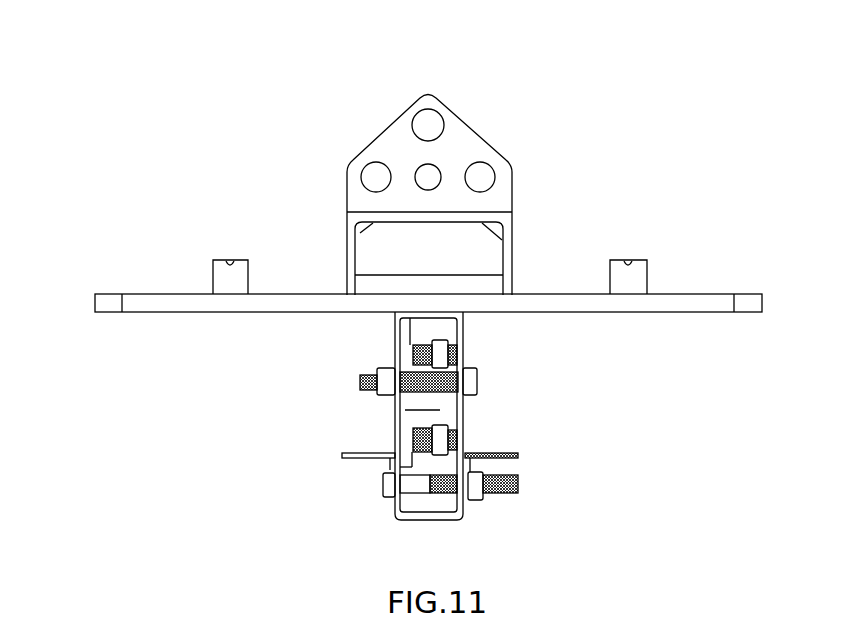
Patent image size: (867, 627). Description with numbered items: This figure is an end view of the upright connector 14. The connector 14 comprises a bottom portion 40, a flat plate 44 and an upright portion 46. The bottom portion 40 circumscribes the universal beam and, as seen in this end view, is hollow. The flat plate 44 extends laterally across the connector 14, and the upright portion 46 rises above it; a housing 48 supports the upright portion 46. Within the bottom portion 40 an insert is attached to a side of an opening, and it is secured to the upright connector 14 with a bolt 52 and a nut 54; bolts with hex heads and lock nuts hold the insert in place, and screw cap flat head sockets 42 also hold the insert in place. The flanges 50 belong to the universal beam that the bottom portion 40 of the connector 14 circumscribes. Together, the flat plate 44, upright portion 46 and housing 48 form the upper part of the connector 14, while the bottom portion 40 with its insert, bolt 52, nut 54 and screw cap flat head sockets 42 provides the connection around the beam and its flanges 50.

The upright connector 14 is at (326, 180).
The upright portion 46 is at (463, 136).
The housing 48 is at (515, 247).
The flat plate 44 is at (155, 294).
The bottom portion 40 is at (463, 360).
The screw cap flat head sockets 42 is at (420, 348).
The bolt 52 is at (477, 393).
The nut 54 is at (377, 396).
The flanges 50 is at (463, 412).